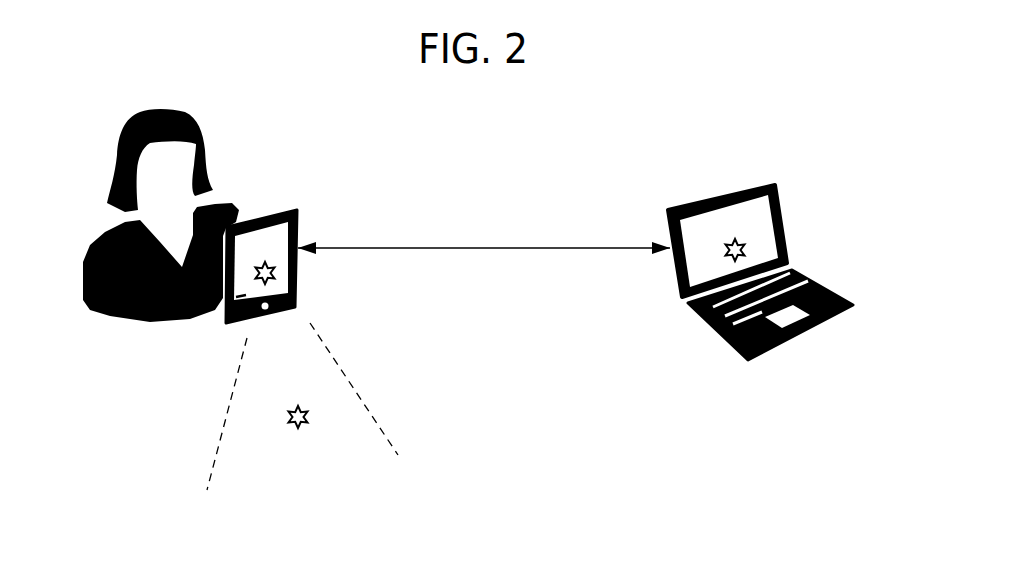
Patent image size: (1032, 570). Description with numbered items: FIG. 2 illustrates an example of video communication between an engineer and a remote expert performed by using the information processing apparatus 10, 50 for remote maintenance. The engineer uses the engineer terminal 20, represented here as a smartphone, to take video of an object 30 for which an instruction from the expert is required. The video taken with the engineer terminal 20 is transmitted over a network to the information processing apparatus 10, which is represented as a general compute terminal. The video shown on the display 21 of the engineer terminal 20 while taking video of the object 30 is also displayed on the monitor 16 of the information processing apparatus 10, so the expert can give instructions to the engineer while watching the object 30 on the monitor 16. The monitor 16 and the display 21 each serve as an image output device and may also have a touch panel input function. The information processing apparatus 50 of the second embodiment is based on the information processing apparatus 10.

The information processing apparatus 10 is at (772, 186).
The information processing apparatus 50 is at (760, 272).
The monitor 16 is at (762, 223).
The engineer terminal 20 is at (297, 211).
The display 21 is at (226, 307).
The object 30 is at (277, 275).